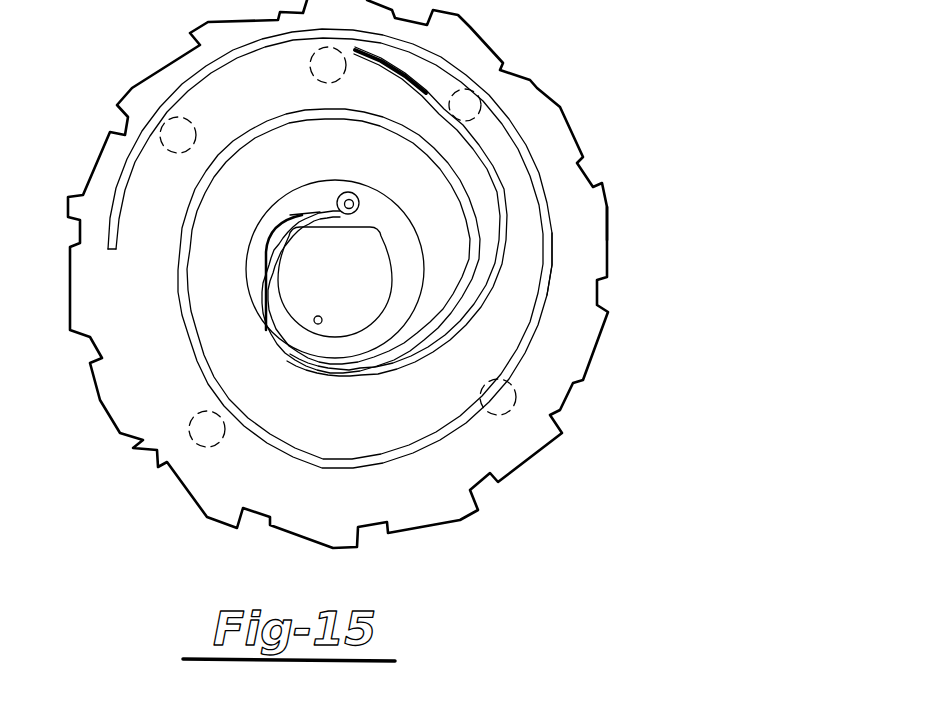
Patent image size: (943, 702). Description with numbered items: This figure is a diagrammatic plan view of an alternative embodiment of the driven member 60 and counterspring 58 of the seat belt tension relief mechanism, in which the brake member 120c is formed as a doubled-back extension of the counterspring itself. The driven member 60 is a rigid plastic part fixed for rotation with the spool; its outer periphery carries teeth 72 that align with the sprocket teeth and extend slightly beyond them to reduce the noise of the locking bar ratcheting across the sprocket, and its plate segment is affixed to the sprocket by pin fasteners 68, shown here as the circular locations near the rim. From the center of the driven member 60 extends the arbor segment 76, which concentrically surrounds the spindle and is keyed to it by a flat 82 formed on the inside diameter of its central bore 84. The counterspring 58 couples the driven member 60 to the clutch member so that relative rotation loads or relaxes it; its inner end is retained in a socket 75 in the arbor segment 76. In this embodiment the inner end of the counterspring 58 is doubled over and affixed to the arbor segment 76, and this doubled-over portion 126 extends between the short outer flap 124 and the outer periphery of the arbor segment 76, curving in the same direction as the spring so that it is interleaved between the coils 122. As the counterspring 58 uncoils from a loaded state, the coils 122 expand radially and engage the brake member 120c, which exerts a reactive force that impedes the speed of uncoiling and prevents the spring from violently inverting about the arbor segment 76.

The driven member 60 is at (563, 102).
The teeth 72 is at (598, 212).
The pin fasteners 68 is at (510, 403).
The intermediate coil portions 122 is at (442, 298).
The counterspring 58 is at (558, 253).
The brake member 120c is at (500, 191).
The arbor segment 76 is at (400, 239).
The flat 82 is at (340, 231).
The doubled-over portion 126 is at (298, 213).
The socket 75 is at (359, 200).
The outer flap 124 is at (253, 268).
The central bore 84 is at (316, 324).